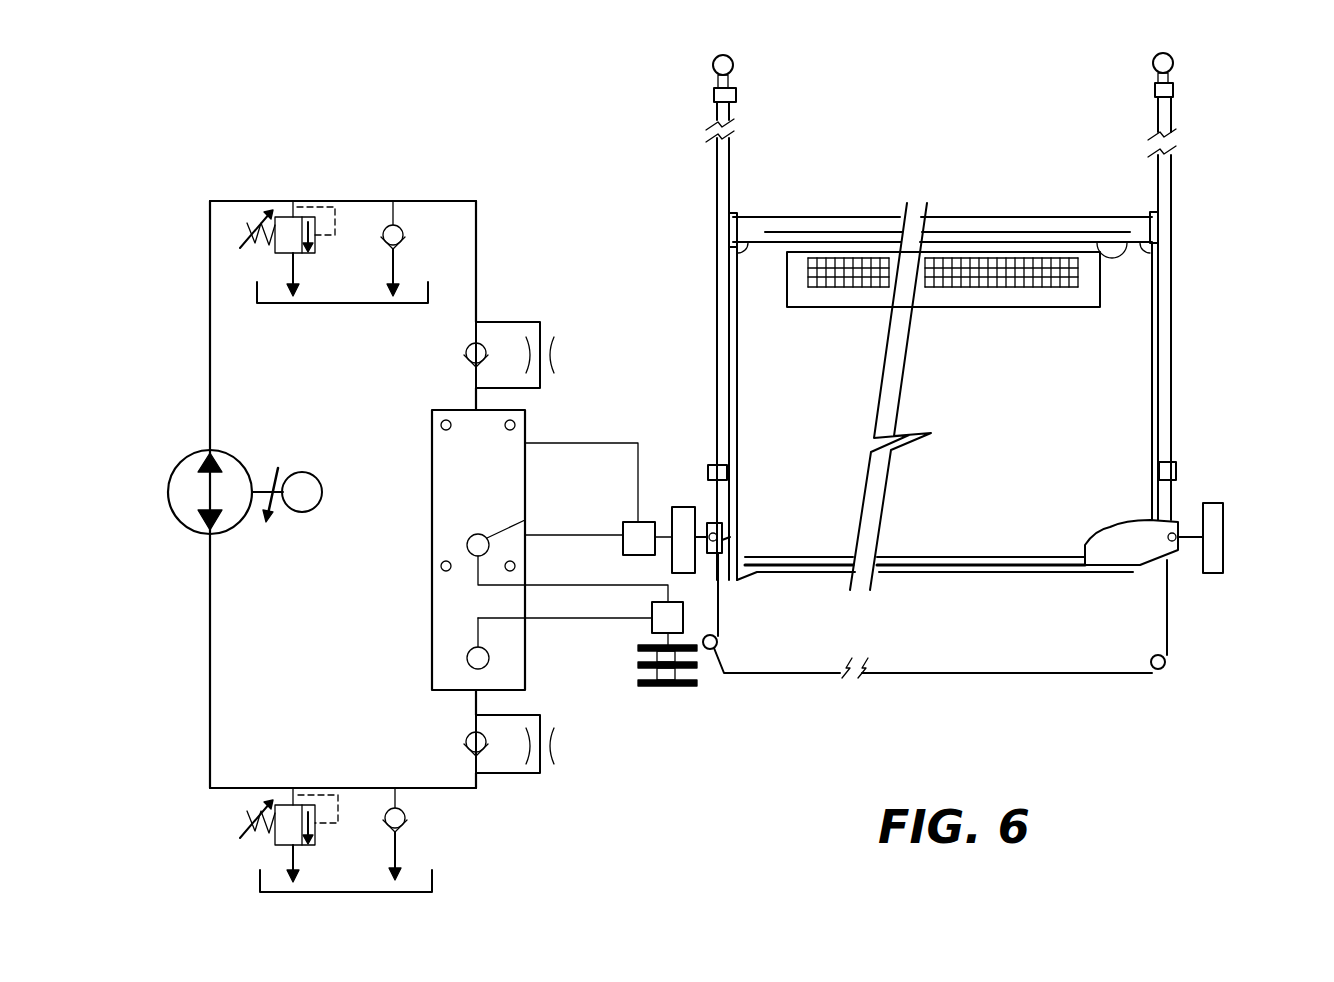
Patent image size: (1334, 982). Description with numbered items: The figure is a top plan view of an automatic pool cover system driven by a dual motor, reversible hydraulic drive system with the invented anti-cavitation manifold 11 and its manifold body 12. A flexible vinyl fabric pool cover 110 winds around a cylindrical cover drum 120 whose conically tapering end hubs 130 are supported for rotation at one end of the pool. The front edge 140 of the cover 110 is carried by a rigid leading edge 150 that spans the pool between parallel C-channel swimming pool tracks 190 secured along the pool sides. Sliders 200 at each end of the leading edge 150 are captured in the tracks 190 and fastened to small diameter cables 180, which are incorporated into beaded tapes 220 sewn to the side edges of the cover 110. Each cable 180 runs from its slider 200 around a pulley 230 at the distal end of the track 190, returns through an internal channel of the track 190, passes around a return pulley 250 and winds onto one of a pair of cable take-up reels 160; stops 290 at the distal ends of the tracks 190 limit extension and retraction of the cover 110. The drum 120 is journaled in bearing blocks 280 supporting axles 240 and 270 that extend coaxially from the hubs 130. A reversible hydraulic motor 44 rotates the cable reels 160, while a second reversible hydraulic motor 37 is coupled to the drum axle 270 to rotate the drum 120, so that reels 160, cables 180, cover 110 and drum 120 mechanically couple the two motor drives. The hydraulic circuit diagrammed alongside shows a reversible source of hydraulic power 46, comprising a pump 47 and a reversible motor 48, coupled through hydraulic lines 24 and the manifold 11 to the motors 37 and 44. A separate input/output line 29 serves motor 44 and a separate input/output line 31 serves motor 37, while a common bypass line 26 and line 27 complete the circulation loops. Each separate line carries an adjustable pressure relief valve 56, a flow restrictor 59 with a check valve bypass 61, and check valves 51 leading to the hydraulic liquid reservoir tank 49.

The anti-cavitation manifold 11 is at (422, 442).
The manifold body 12 is at (490, 493).
The hydraulic lines 24 is at (474, 398).
The common bypass line 26 is at (467, 547).
The hydraulic line 27 is at (581, 489).
The separate input/output line 29 is at (210, 658).
The separate input/output line 31 is at (210, 367).
The reversible hydraulic motor 37 is at (632, 525).
The reversible hydraulic motor 44 is at (650, 627).
The reversible source of hydraulic power 46 is at (257, 468).
The pump 47 is at (178, 480).
The reversible motor 48 is at (322, 492).
The hydraulic liquid reservoir tank 49 is at (334, 304).
The check valves 51 is at (398, 226).
The adjustable pressure relief valves 56 is at (273, 253).
The flow restrictor 59 is at (556, 360).
The check valve bypass 61 is at (483, 343).
The pool cover 110 is at (1028, 462).
The cover drum 120 is at (1108, 575).
The conically tapering end sections or hubs 130 is at (714, 523).
The front edge 140 is at (1130, 240).
The rigid leading edge 150 is at (830, 218).
The cable take-up reels 160 is at (655, 688).
The cables 180 is at (720, 630).
The swimming pool tracks 190 is at (735, 158).
The sliders 200 is at (728, 228).
The beaded tape 220 is at (742, 358).
The pulley 230 is at (735, 64).
The axle 240 is at (1185, 545).
The return pulleys 250 is at (716, 650).
The cover drum axle 270 is at (725, 546).
The bearing blocks 280 is at (695, 573).
The stops 290 is at (712, 94).